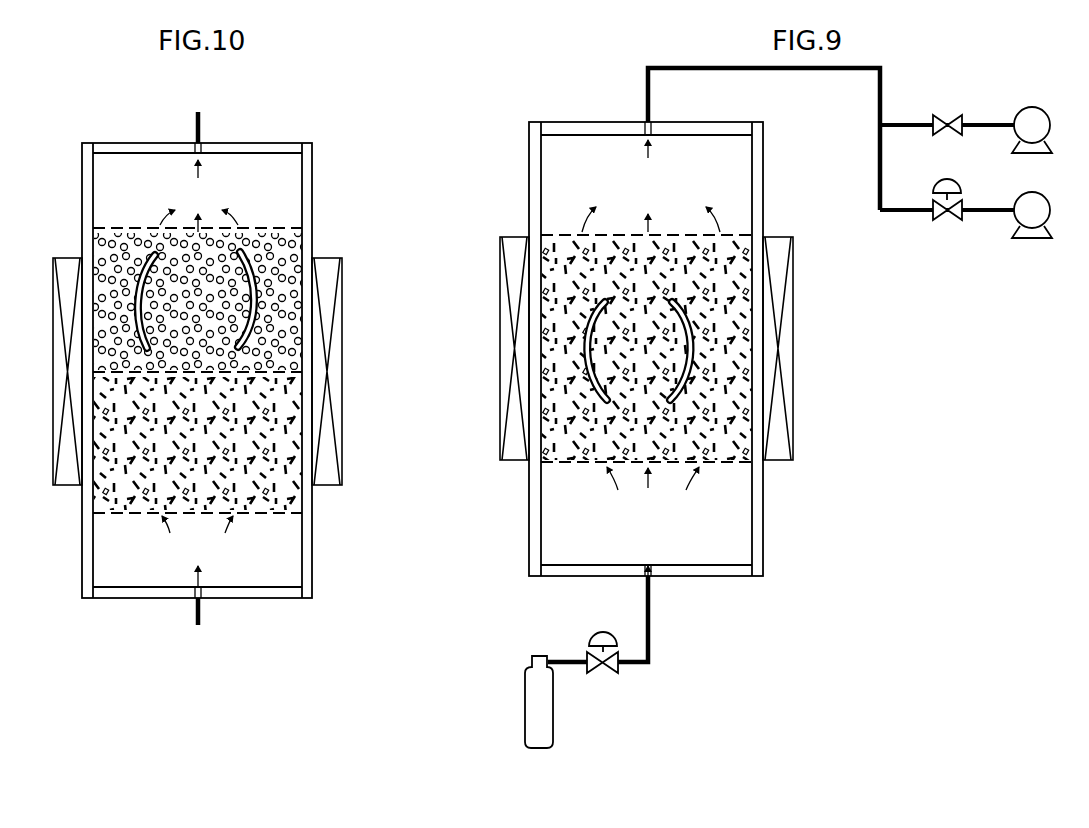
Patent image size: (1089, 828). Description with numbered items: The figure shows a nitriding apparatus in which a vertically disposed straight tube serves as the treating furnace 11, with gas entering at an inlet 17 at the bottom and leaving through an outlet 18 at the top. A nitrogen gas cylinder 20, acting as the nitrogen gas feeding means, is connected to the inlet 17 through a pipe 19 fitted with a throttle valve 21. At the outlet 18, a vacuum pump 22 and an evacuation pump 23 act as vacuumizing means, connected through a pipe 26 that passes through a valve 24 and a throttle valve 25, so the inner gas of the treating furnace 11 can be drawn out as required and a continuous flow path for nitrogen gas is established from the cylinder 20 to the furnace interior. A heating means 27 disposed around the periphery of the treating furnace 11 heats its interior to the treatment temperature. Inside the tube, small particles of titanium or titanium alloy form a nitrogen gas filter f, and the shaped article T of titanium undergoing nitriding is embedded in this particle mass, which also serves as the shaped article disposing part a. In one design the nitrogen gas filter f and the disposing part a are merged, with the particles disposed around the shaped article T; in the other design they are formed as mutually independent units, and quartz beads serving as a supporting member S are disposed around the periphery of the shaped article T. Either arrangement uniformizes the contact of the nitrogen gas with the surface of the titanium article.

In FIG. 10, the treating furnace 11 is at (314, 190).
In FIG. 9, the treating furnace 11 is at (766, 180).
In FIG. 10, the inlet 17 is at (202, 582).
In FIG. 9, the inlet 17 is at (652, 558).
In FIG. 10, the outlet 18 is at (194, 158).
In FIG. 9, the outlet 18 is at (644, 140).
In FIG. 10, the pipe 19 is at (195, 616).
In FIG. 9, the pipe 19 is at (652, 608).
In FIG. 9, the nitrogen gas cylinder 20 is at (553, 720).
In FIG. 9, the throttle valve 21 is at (620, 668).
In FIG. 9, the vacuum pump 22 is at (1035, 118).
In FIG. 9, the evacuation pump 23 is at (1032, 205).
In FIG. 9, the valve 24 is at (958, 118).
In FIG. 9, the throttle valve 25 is at (958, 222).
In FIG. 10, the pipe 26 is at (203, 122).
In FIG. 9, the pipe 26 is at (725, 70).
In FIG. 10, the heating means 27 is at (55, 368).
In FIG. 9, the heating means 27 is at (505, 378).
In FIG. 10, the supporting member S is at (97, 252).
In FIG. 10, the shaped article of titanium T is at (143, 262).
In FIG. 9, the shaped article of titanium T is at (585, 342).
In FIG. 10, the shaped article disposing part a is at (285, 320).
In FIG. 9, the shaped article disposing part a is at (735, 280).
In FIG. 10, the nitrogen gas filter f is at (293, 422).
In FIG. 9, the nitrogen gas filter f is at (735, 360).